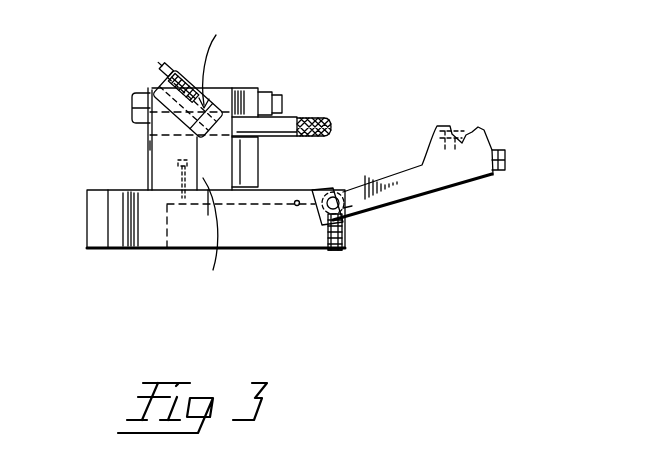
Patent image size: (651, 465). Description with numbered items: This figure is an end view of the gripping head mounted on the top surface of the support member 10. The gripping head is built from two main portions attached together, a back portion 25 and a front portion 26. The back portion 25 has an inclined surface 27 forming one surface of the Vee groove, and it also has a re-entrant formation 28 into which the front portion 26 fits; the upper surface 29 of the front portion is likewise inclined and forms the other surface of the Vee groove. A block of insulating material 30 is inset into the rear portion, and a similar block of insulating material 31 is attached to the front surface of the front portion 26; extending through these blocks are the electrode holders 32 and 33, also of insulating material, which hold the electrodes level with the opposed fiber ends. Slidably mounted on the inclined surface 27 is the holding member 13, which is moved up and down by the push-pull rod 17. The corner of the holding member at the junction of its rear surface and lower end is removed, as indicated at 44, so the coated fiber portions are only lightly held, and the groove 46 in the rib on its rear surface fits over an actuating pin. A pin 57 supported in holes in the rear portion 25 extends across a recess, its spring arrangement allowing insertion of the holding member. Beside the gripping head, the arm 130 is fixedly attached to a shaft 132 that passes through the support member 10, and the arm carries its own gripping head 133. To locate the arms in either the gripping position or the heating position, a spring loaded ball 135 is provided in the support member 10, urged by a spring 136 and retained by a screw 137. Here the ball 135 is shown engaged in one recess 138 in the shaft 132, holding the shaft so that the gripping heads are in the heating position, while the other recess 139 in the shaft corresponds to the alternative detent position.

The support member 10 is at (148, 238).
The holding member 13 is at (186, 78).
The push-pull rod 17 is at (280, 118).
The back portion 25 is at (162, 165).
The front portion 26 is at (213, 270).
The inclined surface 27 is at (174, 74).
The re-entrant formation 28 is at (150, 80).
The upper surface 29 is at (213, 104).
The block of insulating material 30 is at (150, 141).
The block of insulating material 31 is at (244, 88).
The electrode holder 32 is at (132, 107).
The electrode holder 33 is at (278, 96).
The removed corner 44 is at (215, 61).
The groove 46 is at (150, 134).
The pin 57 is at (151, 72).
The arm 130 is at (420, 187).
The shaft 132 is at (331, 193).
The gripping head 133 is at (438, 126).
The ball 135 is at (347, 226).
The spring 136 is at (345, 240).
The screw 137 is at (336, 251).
The recess 138 is at (352, 208).
The recess 139 is at (322, 196).